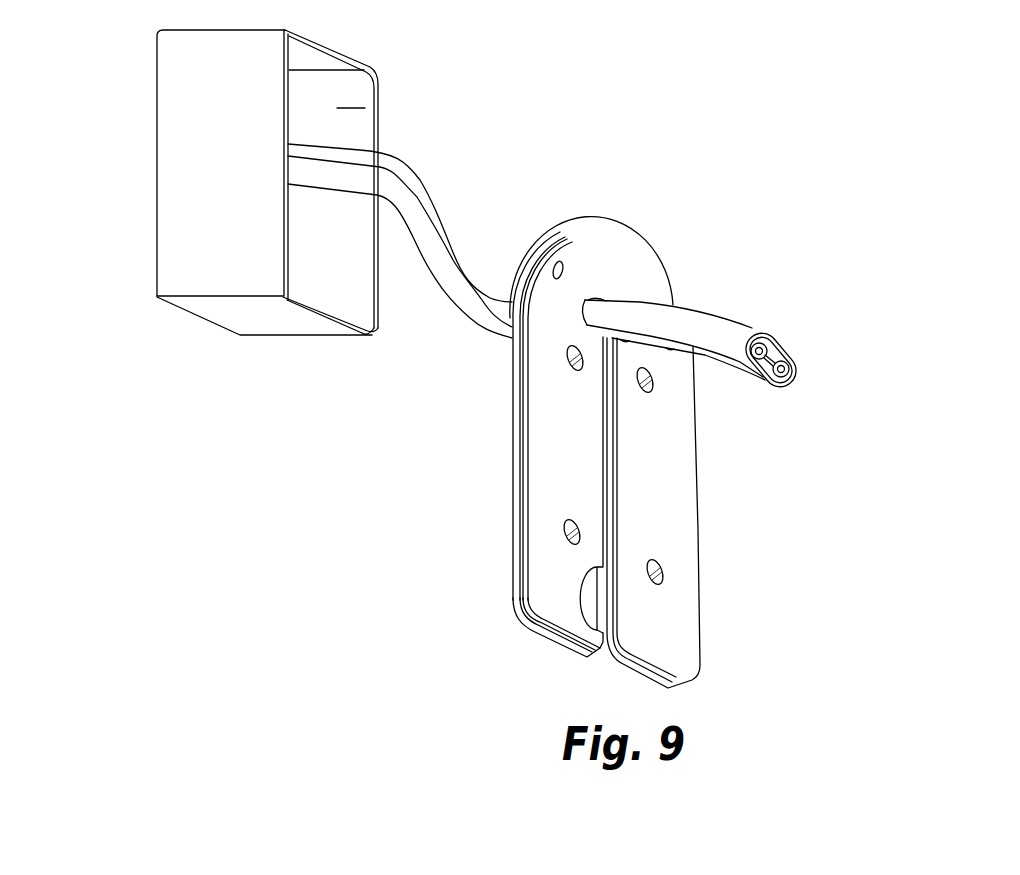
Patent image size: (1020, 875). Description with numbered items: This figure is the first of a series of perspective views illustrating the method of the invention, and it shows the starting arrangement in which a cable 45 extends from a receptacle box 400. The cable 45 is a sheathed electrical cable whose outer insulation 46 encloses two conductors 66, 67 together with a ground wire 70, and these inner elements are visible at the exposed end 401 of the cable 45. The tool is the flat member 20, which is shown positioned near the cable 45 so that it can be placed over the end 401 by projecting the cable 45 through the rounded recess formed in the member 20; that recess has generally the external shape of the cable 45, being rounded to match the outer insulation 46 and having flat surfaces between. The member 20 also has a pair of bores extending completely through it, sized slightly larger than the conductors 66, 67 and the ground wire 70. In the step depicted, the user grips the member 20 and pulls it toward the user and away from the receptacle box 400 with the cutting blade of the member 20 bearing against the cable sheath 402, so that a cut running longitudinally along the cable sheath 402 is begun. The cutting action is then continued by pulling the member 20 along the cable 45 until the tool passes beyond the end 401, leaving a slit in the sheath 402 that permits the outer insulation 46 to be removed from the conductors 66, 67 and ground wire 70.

The receptacle box 400 is at (255, 312).
The cable sheath 402 is at (430, 227).
The end of the cable 401 is at (698, 320).
The cable 45 is at (764, 320).
The outer insulation 46 is at (787, 350).
The conductor 66 is at (760, 377).
The conductor 67 is at (790, 377).
The ground wire 70 is at (760, 367).
The member 20 is at (680, 533).